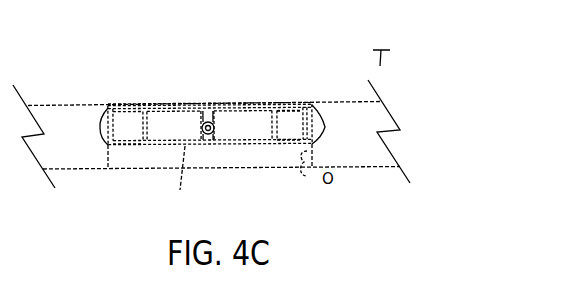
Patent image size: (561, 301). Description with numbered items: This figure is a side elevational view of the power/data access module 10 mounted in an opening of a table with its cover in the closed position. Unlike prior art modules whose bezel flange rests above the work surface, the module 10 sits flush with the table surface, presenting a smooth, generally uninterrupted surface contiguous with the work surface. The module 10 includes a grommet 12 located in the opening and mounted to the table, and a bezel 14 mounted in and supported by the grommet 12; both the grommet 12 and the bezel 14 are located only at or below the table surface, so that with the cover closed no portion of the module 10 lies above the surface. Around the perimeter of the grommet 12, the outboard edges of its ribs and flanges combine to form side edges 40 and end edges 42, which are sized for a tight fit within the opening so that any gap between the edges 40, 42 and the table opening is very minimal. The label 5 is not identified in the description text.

The panel surface 5 is at (332, 101).
The power/data access module 10 is at (134, 81).
The grommet 12 is at (288, 111).
The bezel 14 is at (253, 104).
The side edges 40 is at (101, 116).
The end edges 42 is at (127, 145).